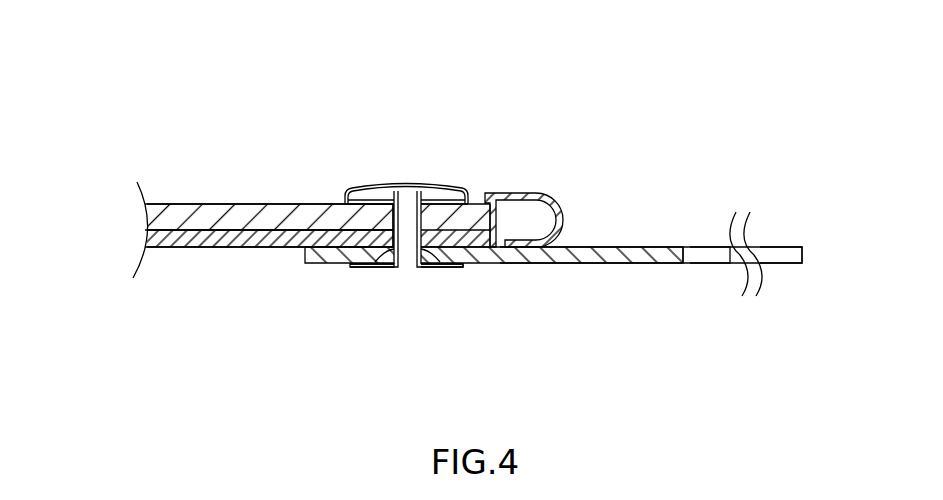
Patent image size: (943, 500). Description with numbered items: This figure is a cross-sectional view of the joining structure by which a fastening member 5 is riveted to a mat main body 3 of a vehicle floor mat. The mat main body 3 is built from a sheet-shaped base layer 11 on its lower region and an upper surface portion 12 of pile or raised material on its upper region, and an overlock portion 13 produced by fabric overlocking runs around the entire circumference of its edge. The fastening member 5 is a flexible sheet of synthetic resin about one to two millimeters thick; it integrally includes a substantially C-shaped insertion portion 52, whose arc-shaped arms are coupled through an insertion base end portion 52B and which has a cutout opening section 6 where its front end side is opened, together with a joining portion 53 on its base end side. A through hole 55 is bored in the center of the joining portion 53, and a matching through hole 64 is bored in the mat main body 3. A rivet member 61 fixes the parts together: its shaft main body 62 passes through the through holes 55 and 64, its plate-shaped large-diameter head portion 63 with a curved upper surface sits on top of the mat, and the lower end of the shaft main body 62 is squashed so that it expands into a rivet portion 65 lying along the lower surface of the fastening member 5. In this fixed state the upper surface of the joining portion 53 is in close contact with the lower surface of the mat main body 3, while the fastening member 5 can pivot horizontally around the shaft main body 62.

The mat main body 3 is at (290, 183).
The base layer 11 is at (148, 240).
The upper surface portion 12 is at (149, 213).
The overlock portion 13 is at (520, 192).
The fastening member 5 is at (797, 238).
The cutout opening section 6 is at (708, 256).
The insertion portion 52 is at (785, 259).
The insertion base end portion 52B is at (662, 246).
The joining portion 53 is at (303, 265).
The through hole 55 is at (442, 252).
The rivet member 61 is at (408, 223).
The shaft main body 62 is at (355, 251).
The large-diameter head portion 63 is at (395, 187).
The through hole 64 is at (452, 253).
The rivet portion 65 is at (380, 264).